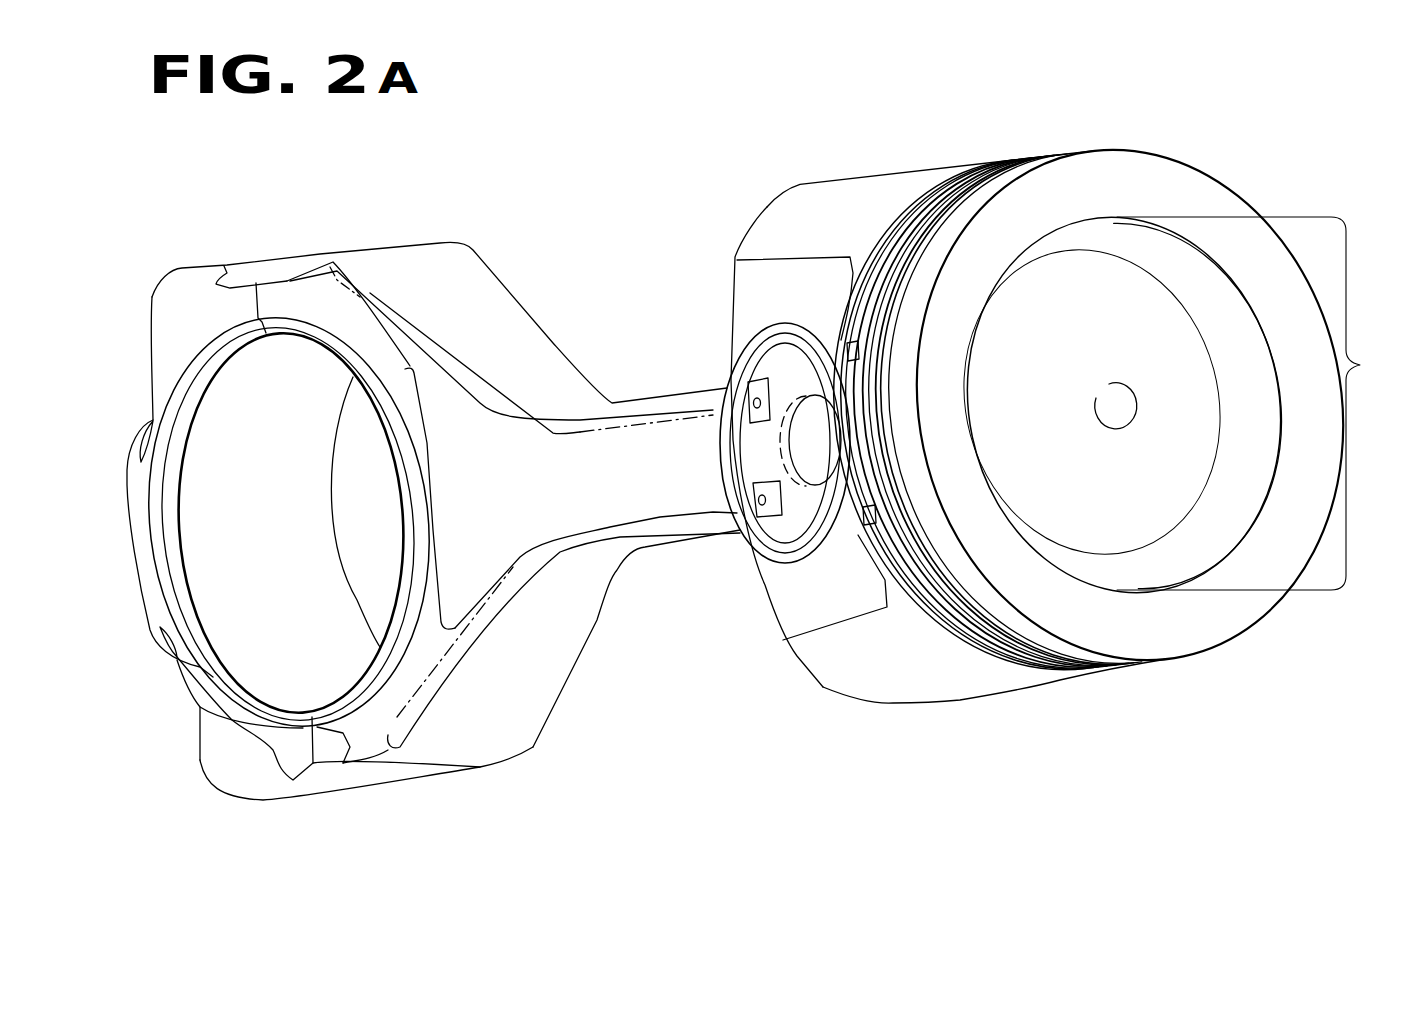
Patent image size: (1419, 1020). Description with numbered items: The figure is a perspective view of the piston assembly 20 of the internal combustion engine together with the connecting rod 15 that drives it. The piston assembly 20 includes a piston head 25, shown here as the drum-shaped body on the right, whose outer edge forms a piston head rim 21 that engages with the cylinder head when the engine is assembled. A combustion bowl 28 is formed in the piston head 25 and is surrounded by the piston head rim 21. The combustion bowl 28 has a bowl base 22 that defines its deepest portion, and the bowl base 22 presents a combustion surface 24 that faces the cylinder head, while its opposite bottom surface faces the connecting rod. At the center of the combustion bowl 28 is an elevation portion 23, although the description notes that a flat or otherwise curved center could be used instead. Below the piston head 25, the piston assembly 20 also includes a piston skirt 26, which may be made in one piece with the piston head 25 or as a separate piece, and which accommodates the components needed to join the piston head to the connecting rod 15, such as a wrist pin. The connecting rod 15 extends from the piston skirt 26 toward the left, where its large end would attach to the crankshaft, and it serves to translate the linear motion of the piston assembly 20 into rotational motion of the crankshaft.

The connecting rod 15 is at (618, 512).
The piston assembly 20 is at (1286, 105).
The piston head rim 21 is at (1143, 635).
The bowl base 22 is at (1180, 518).
The elevation portion 23 is at (1104, 386).
The combustion surface 24 is at (1153, 308).
The piston head 25 is at (1140, 141).
The piston skirt 26 is at (907, 673).
The combustion bowl 28 is at (1259, 403).